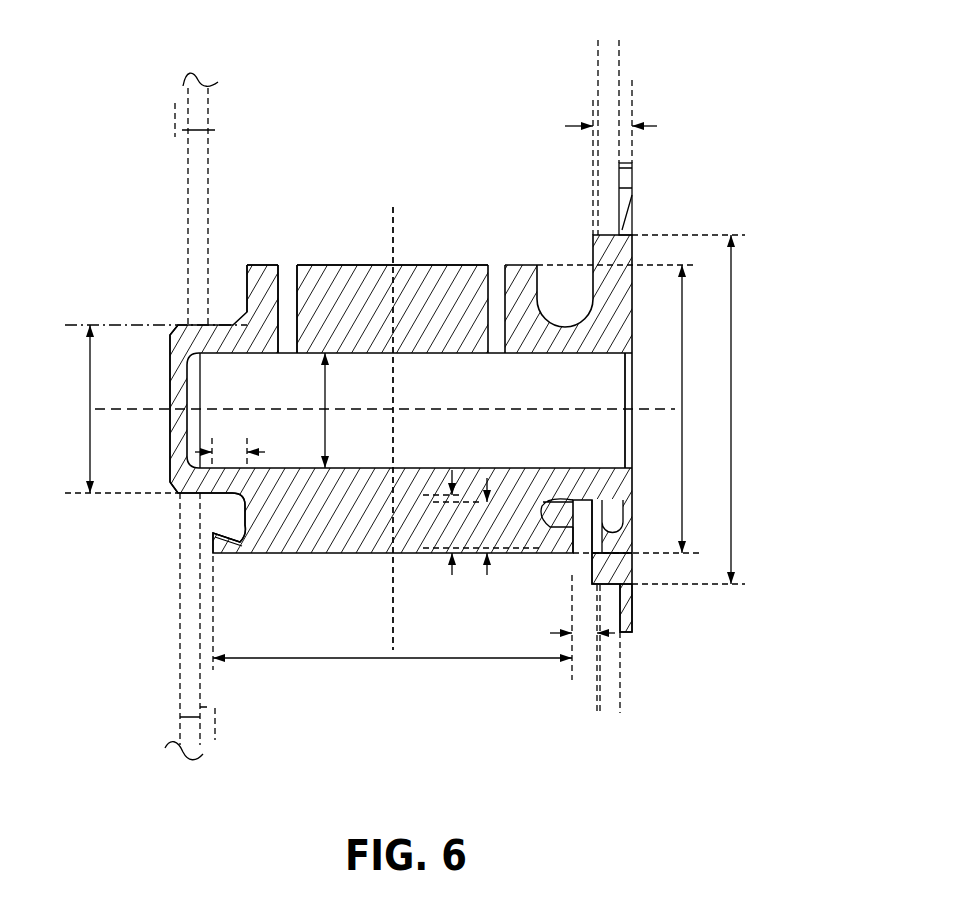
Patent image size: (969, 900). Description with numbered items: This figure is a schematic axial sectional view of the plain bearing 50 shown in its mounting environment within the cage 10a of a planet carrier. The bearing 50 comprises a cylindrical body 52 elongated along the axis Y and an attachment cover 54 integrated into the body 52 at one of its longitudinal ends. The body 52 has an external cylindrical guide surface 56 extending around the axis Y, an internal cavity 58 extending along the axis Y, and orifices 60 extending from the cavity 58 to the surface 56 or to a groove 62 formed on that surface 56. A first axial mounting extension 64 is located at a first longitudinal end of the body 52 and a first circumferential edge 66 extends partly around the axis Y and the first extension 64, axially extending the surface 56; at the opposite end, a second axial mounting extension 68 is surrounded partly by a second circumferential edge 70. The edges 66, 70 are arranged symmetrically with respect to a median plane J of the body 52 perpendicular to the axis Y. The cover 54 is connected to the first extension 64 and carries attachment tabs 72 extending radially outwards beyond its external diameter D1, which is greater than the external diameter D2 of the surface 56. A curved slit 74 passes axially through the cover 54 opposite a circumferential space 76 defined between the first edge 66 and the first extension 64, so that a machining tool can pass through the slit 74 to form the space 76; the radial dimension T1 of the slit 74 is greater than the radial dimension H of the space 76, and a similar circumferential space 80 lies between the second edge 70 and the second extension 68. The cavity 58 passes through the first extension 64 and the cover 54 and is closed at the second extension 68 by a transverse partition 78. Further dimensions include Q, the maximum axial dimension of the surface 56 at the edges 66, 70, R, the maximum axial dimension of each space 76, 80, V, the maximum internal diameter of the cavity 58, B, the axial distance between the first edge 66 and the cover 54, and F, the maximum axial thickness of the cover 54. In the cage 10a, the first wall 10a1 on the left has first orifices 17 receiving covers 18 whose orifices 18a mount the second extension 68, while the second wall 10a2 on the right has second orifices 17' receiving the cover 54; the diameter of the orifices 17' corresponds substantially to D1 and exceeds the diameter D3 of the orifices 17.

The cage 10a is at (183, 90).
The first wall 10a1 is at (200, 112).
The second wall 10a2 is at (600, 58).
The first orifices 17 is at (152, 206).
The second orifices 17' is at (663, 190).
The covers 18 is at (182, 282).
The orifices 18a is at (170, 333).
The plain bearing 50 is at (722, 185).
The cylindrical body 52 is at (245, 262).
The attachment cover 54 is at (645, 586).
The external cylindrical guide surface 56 is at (372, 266).
The internal cavity 58 is at (400, 458).
The orifices 60 is at (297, 293).
The groove 62 is at (282, 275).
The first axial mounting extension 64 is at (562, 328).
The first circumferential edge 66 is at (560, 550).
The second axial mounting extension 68 is at (178, 493).
The second circumferential edge 70 is at (228, 553).
The attachment tabs 72 is at (623, 632).
The slit 74 is at (618, 513).
The circumferential space 76 is at (550, 518).
The transverse partition 78 is at (170, 383).
The circumferential space 80 is at (233, 515).
The external diameter of the cover D1 is at (732, 420).
The external diameter of the surface D2 is at (685, 487).
The diameter of the orifices D3 is at (87, 443).
The maximum internal diameter of the cavity V is at (327, 398).
The maximum axial dimension of the circumferential space R is at (260, 450).
The radial dimension of the circumferential space H is at (452, 565).
The radial dimension of the slit T1 is at (487, 565).
The maximum axial dimension of the surface Q is at (403, 660).
The axial distance between the first edge and the cover B is at (555, 633).
The maximum axial thickness of the cover F is at (650, 122).
The median plane J is at (393, 240).
The axis Y is at (638, 410).